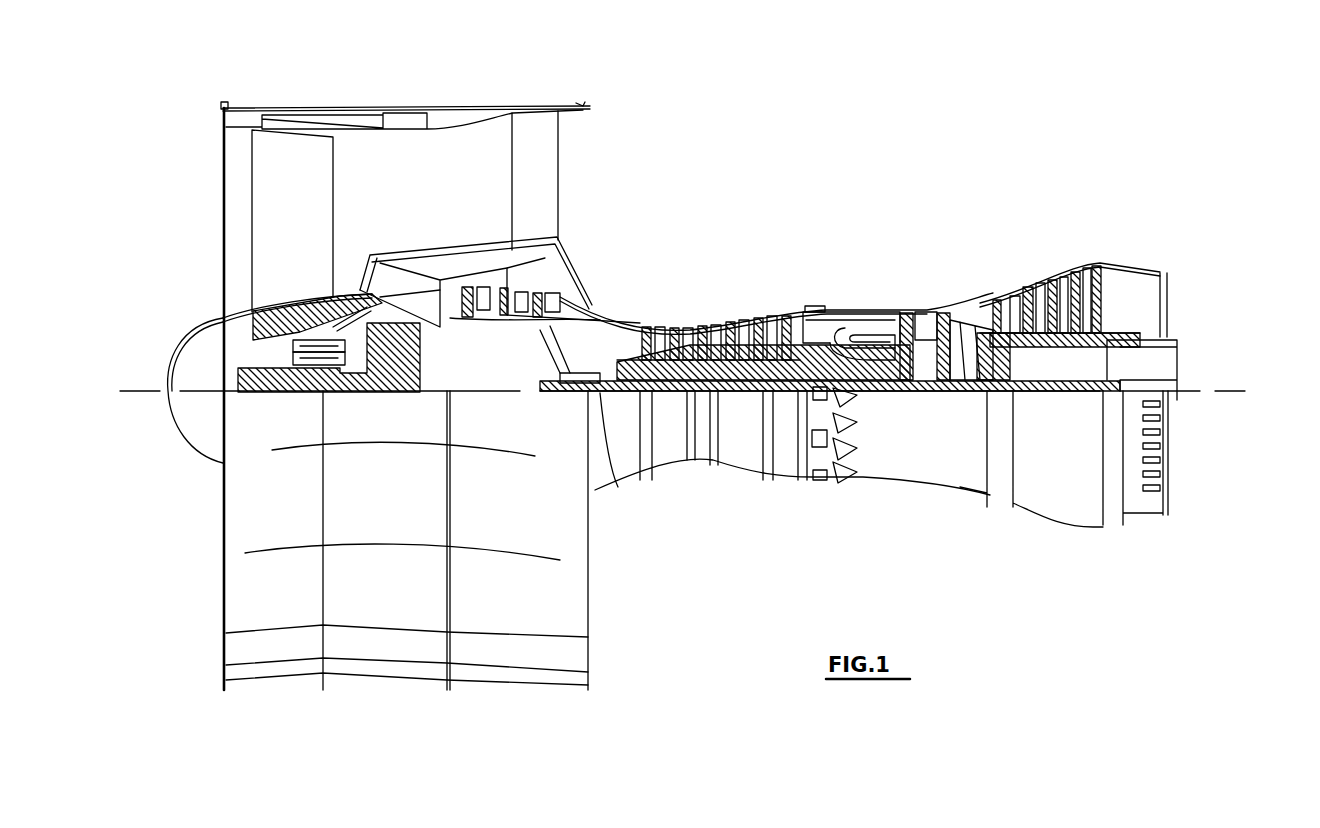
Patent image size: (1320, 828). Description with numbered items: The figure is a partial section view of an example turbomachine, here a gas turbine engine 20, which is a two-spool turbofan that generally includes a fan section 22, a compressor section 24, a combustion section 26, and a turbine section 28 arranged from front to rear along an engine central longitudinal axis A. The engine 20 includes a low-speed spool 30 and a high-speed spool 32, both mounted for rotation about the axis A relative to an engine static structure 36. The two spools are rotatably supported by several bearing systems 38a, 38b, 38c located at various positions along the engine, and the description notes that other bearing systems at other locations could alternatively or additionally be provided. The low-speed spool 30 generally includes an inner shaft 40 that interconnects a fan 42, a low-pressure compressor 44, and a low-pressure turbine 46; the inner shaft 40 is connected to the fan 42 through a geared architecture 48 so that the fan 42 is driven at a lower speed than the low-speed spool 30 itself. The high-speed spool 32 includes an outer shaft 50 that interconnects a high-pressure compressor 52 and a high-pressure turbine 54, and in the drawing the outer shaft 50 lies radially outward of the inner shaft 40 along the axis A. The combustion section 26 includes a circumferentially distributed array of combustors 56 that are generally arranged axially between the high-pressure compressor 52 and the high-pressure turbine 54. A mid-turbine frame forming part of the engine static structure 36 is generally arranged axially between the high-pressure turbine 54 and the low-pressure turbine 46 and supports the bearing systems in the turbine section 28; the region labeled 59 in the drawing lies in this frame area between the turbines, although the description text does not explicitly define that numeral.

The gas turbine engine 20 is at (868, 153).
The fan section 22 is at (335, 100).
The compressor section 24 is at (633, 298).
The combustion section 26 is at (858, 286).
The turbine section 28 is at (1010, 250).
The low-speed spool 30 is at (742, 398).
The high-speed spool 32 is at (787, 360).
The engine static structure 36 is at (775, 484).
The bearing system 38a is at (338, 393).
The bearing system 38b is at (547, 388).
The bearing system 38c is at (975, 385).
The inner shaft 40 is at (600, 395).
The fan 42 is at (306, 234).
The low-pressure compressor 44 is at (540, 290).
The low-pressure turbine 46 is at (1052, 280).
The geared architecture 48 is at (414, 378).
The outer shaft 50 is at (866, 385).
The high-pressure compressor 52 is at (722, 360).
The high-pressure turbine 54 is at (930, 360).
The combustor 56 is at (858, 335).
The mid-turbine frame 59 is at (985, 340).
The engine central longitudinal axis A is at (1240, 391).